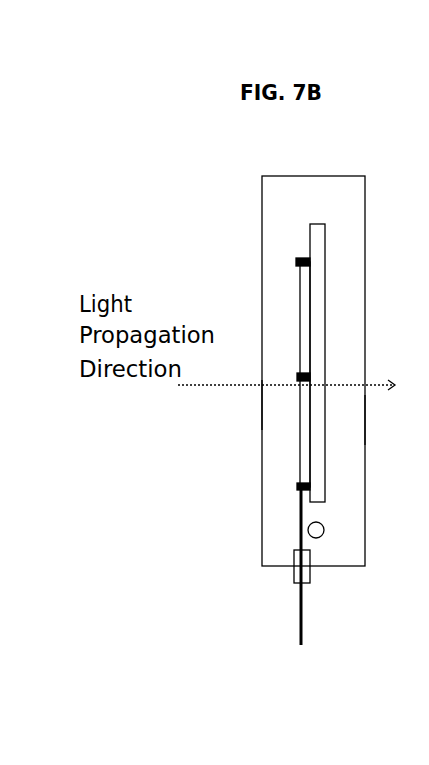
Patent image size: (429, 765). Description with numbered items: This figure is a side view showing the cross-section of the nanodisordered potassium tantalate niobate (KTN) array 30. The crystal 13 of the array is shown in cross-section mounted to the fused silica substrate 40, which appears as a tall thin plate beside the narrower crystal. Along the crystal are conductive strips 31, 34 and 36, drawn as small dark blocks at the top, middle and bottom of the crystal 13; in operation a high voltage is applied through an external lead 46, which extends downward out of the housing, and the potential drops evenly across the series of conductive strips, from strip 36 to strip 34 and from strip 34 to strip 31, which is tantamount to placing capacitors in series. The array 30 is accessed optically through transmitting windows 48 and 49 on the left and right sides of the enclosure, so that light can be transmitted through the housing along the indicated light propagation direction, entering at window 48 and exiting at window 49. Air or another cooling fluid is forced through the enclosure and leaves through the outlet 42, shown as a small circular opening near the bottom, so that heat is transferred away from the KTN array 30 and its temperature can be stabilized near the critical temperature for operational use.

The KTN array 30 is at (268, 166).
The conductive strip 31 is at (297, 266).
The crystal 13 is at (303, 332).
The conductive strip 34 is at (298, 377).
The conductive strip 36 is at (297, 487).
The fused silica substrate 40 is at (320, 463).
The outlet 42 is at (320, 538).
The lead 46 is at (303, 620).
The transmitting window 48 is at (262, 406).
The transmitting window 49 is at (366, 419).